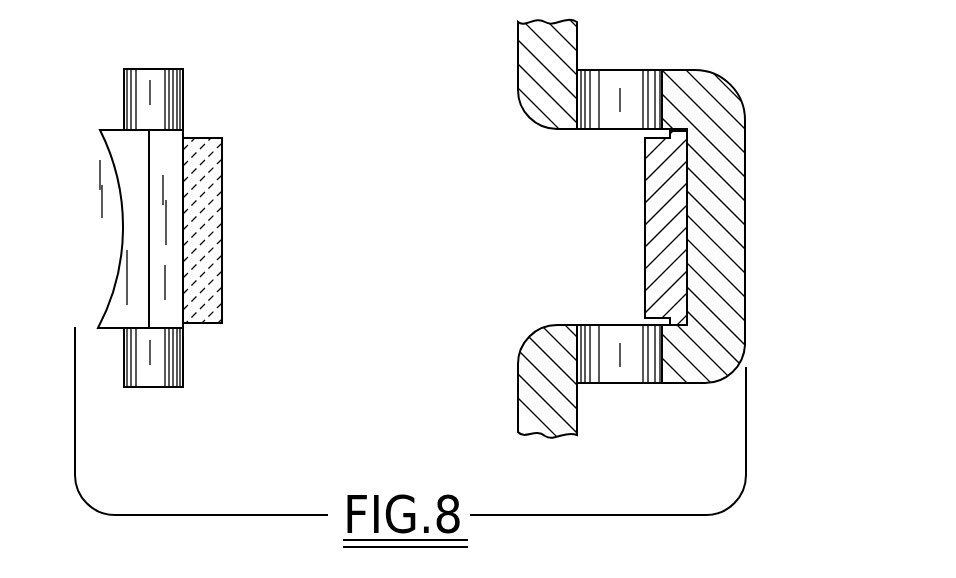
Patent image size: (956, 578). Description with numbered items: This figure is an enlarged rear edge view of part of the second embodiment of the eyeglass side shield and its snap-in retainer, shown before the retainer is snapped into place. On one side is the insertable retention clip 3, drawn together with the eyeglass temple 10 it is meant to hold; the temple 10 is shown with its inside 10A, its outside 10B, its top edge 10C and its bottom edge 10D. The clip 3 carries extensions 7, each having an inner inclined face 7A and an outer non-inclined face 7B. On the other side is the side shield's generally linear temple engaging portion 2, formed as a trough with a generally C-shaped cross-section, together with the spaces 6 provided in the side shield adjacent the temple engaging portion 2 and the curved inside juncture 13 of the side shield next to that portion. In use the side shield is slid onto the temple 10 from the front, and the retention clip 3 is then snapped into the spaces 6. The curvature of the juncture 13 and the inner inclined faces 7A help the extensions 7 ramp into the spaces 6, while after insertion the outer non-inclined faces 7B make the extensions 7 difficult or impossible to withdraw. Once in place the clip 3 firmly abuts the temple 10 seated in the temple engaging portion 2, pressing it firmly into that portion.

The temple engaging portion 2 is at (750, 304).
The retention clip 3 is at (75, 200).
The spaces 6 is at (632, 66).
The extensions 7 is at (172, 69).
The inner inclined faces 7A is at (187, 93).
The outer non-inclined faces 7B is at (120, 91).
The eyeglass temple 10 is at (213, 172).
The inside of the temple 10A is at (178, 256).
The outside of the temple 10B is at (226, 246).
The top edge of the temple 10C is at (202, 135).
The bottom edge of the temple 10D is at (207, 330).
The curved inside juncture 13 is at (528, 112).